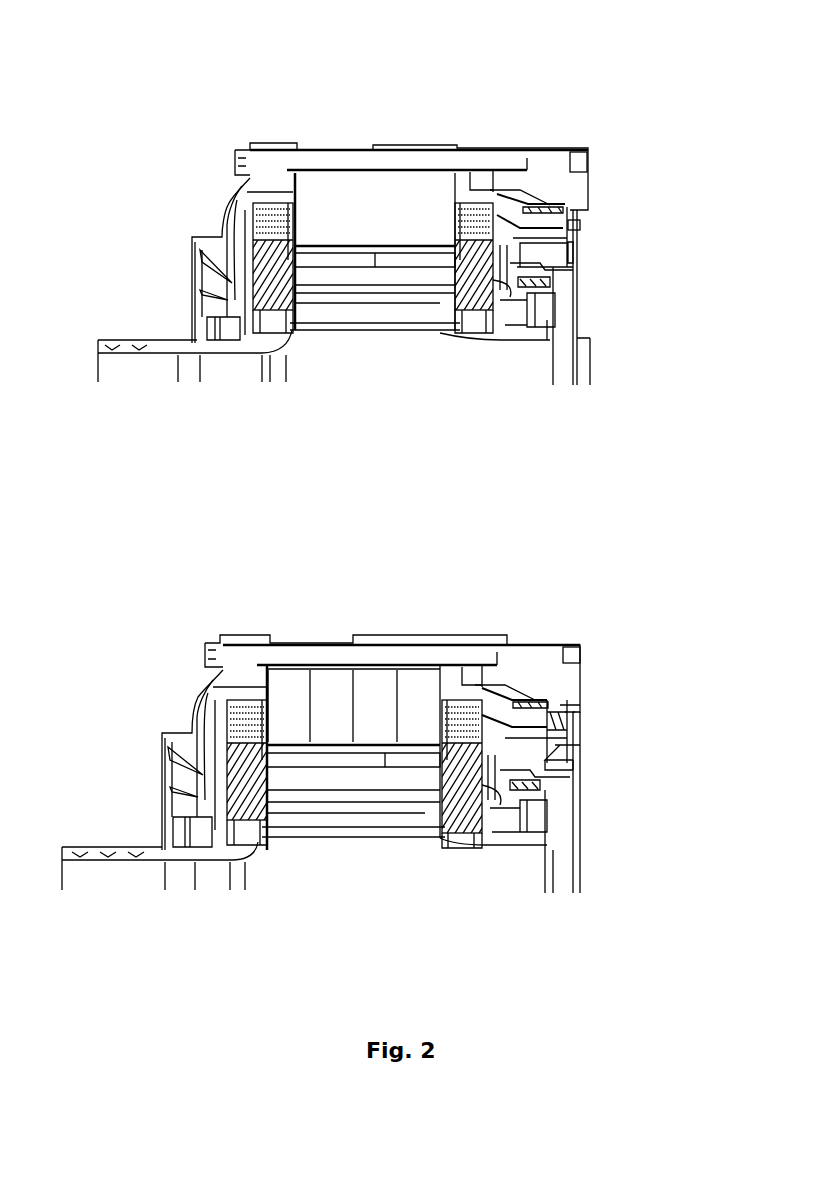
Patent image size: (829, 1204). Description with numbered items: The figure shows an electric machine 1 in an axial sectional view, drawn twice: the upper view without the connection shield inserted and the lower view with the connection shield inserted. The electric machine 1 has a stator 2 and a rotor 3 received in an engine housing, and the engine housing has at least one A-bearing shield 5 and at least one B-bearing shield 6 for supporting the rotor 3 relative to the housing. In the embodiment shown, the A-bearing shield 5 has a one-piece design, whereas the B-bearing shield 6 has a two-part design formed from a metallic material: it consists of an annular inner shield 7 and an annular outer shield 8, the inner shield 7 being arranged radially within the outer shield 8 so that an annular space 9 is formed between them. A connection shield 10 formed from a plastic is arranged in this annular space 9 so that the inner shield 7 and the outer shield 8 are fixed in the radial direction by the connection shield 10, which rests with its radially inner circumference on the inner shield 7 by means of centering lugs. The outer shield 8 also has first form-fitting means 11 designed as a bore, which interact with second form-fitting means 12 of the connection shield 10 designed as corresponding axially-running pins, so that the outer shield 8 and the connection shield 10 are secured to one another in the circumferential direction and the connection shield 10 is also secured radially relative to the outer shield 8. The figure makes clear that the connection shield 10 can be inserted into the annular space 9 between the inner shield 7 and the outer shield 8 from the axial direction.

The electric machine 1 is at (278, 115).
The stator 2 is at (343, 198).
The rotor 3 is at (353, 358).
The A-bearing shield 5 is at (213, 218).
The B-bearing shield 6 is at (645, 208).
The inner shield 7 is at (525, 335).
The outer shield 8 is at (552, 185).
The annular space 9 is at (548, 235).
The connection shield 10 is at (582, 743).
The first form-fitting means 11 is at (580, 228).
The second form-fitting means 12 is at (582, 712).